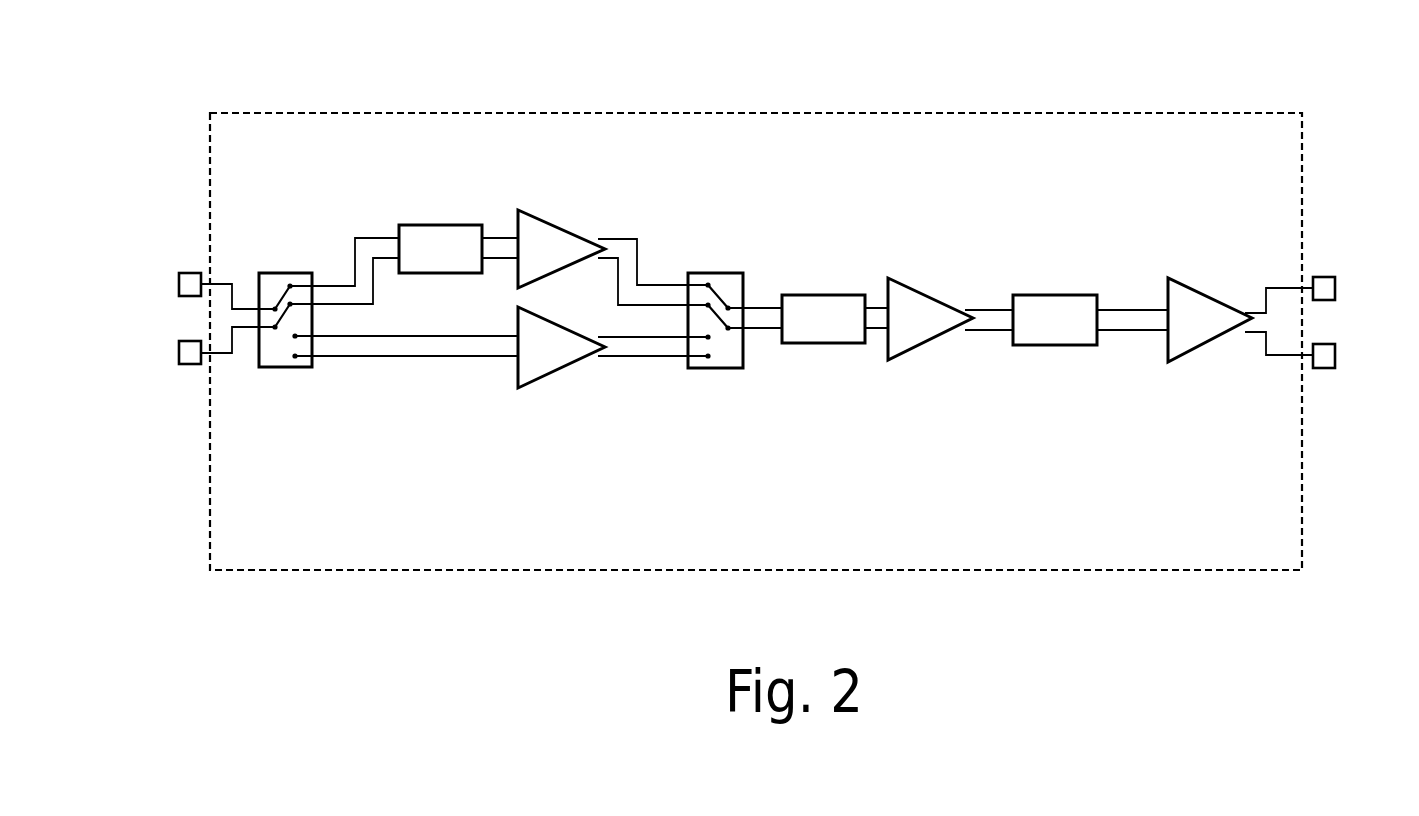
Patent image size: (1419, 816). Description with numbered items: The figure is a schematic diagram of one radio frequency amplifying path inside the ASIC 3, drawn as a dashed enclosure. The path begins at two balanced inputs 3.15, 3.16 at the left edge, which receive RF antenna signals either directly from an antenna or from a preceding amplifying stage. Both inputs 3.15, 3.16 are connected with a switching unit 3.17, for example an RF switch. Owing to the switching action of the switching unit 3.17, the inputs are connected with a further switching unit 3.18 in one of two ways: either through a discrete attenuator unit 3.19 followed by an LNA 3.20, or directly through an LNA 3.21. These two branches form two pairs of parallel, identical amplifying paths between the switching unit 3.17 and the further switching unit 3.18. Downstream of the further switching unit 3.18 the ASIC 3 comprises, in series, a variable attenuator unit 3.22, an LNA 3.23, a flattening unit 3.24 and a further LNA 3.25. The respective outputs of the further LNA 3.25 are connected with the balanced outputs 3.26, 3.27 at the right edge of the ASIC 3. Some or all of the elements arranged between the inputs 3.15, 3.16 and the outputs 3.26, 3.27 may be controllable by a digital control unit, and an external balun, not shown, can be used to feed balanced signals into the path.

The ASIC 3 is at (719, 113).
The balanced input 3.15 is at (179, 283).
The balanced input 3.16 is at (179, 352).
The switching unit 3.17 is at (288, 287).
The further switching unit 3.18 is at (723, 283).
The discrete attenuator unit 3.19 is at (435, 237).
The LNA 3.20 is at (552, 238).
The LNA 3.21 is at (552, 355).
The variable attenuator unit 3.22 is at (813, 308).
The LNA 3.23 is at (922, 327).
The flattening unit 3.24 is at (1047, 308).
The further LNA 3.25 is at (1200, 328).
The balanced output 3.26 is at (1335, 288).
The balanced output 3.27 is at (1335, 357).